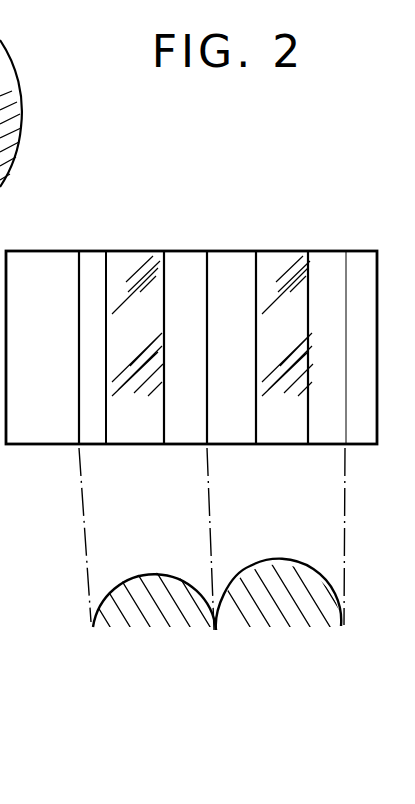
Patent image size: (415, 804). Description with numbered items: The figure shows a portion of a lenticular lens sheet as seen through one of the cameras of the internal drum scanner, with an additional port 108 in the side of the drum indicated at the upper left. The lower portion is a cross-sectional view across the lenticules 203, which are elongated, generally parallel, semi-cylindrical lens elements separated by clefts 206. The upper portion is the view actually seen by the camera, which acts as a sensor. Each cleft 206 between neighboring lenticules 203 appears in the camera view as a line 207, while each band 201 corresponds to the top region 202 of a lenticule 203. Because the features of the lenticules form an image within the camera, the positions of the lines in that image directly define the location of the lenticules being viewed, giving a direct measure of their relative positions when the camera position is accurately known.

The port 108 is at (3, 186).
The band 201 is at (127, 265).
The line 207 is at (210, 283).
The top region 202 is at (152, 564).
The lenticule 203 is at (107, 594).
The cleft 206 is at (233, 630).